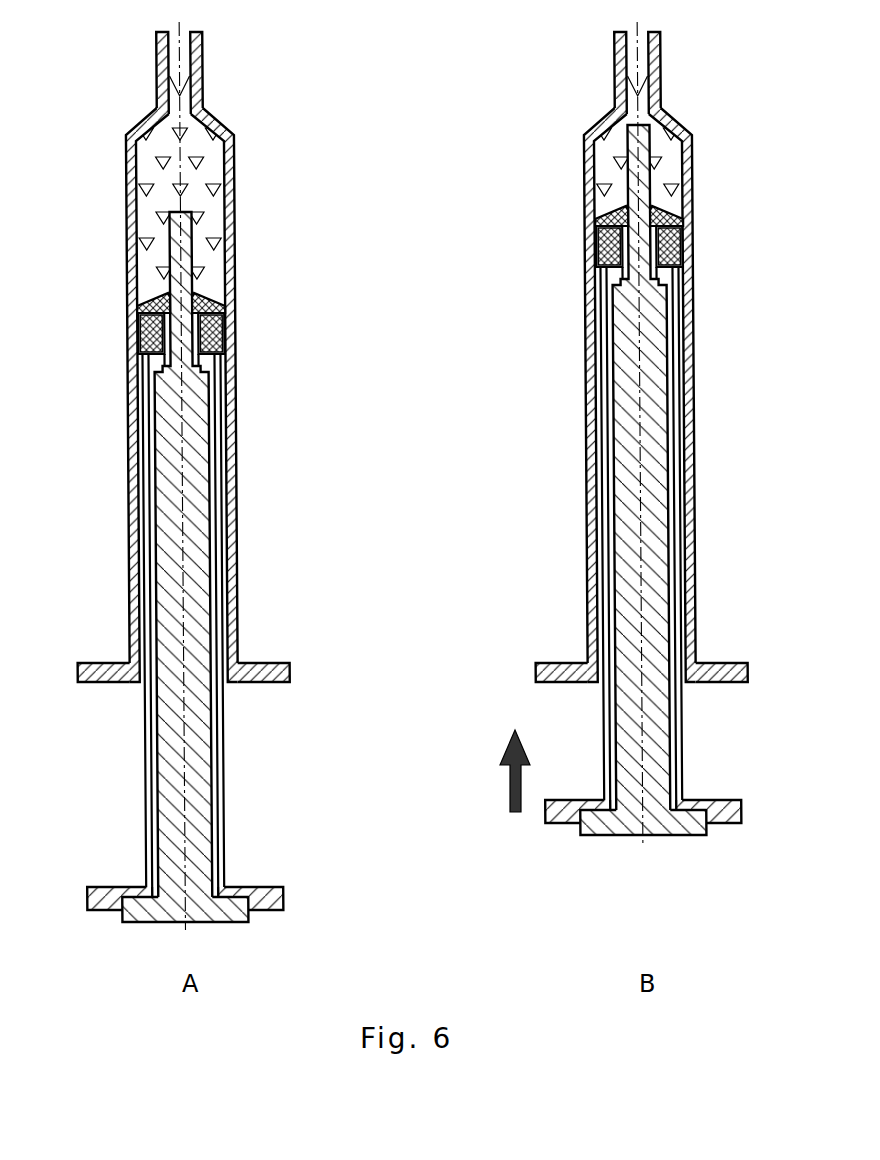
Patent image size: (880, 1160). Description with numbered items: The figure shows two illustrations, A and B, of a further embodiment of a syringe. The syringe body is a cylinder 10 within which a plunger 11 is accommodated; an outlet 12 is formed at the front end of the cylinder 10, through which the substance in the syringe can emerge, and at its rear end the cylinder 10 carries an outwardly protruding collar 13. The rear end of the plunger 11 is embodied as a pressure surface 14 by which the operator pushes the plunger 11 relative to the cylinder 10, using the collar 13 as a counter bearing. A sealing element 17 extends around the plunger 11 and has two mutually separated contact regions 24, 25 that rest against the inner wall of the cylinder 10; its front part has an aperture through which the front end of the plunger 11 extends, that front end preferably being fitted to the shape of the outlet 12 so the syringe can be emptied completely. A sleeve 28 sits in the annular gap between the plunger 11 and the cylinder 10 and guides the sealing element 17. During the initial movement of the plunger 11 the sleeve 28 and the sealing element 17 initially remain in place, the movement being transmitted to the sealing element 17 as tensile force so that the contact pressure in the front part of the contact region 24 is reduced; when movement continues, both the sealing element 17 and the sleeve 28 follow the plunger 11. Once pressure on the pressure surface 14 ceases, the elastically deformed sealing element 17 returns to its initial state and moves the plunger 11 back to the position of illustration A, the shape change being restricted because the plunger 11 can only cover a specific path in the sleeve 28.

The cylinder 10 is at (236, 148).
The plunger 11 is at (211, 805).
The outlet 12 is at (203, 46).
The collar 13 is at (289, 672).
The pressure surface 14 is at (216, 925).
The sealing element 17 is at (237, 301).
The contact region 24 is at (139, 312).
The contact region 25 is at (140, 352).
The sleeve 28 is at (221, 512).